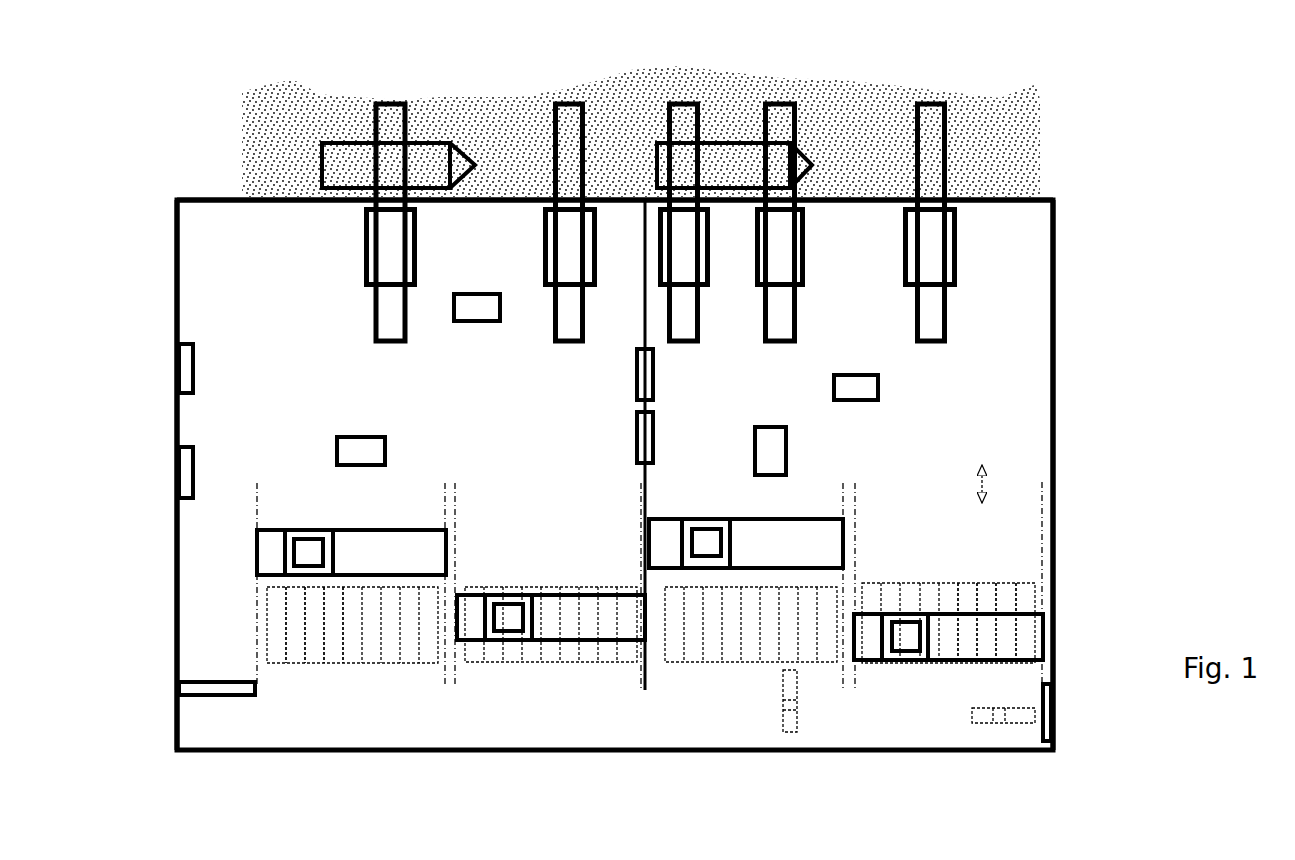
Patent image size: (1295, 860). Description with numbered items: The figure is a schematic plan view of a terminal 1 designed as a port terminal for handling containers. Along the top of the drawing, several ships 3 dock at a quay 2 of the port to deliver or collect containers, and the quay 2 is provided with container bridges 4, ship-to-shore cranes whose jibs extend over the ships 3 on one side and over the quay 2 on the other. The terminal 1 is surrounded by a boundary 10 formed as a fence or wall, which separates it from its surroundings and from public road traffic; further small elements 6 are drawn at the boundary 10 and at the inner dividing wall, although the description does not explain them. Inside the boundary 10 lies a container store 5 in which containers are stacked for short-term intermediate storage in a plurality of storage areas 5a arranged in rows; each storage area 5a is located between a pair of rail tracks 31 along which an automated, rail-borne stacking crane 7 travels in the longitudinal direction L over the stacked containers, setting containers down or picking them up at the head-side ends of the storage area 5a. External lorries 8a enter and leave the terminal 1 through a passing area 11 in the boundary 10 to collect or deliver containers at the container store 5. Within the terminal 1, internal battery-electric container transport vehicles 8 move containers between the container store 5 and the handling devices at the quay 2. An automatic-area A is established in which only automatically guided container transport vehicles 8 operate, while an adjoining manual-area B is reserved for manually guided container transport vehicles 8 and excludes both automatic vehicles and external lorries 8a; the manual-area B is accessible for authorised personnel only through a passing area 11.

The terminal 1 is at (148, 217).
The quay 2 is at (340, 207).
The ships 3 is at (727, 162).
The container bridges 4 is at (380, 270).
The container store 5 is at (325, 612).
The storage area 5a is at (310, 640).
The wall-mounted units 6 is at (200, 357).
The stacking crane 7 is at (315, 553).
The container transport vehicles 8 is at (480, 294).
The external lorries 8a is at (768, 705).
The boundary 10 is at (170, 297).
The passing area 11 is at (660, 435).
The rail tracks 31 is at (847, 488).
The automatic-area A is at (950, 392).
The manual-area B is at (267, 295).
The longitudinal direction L is at (991, 484).